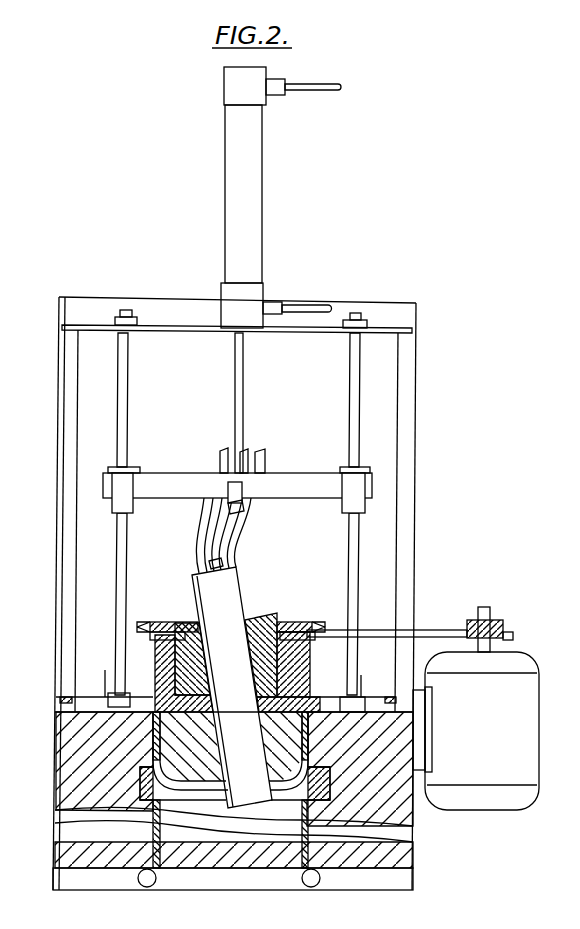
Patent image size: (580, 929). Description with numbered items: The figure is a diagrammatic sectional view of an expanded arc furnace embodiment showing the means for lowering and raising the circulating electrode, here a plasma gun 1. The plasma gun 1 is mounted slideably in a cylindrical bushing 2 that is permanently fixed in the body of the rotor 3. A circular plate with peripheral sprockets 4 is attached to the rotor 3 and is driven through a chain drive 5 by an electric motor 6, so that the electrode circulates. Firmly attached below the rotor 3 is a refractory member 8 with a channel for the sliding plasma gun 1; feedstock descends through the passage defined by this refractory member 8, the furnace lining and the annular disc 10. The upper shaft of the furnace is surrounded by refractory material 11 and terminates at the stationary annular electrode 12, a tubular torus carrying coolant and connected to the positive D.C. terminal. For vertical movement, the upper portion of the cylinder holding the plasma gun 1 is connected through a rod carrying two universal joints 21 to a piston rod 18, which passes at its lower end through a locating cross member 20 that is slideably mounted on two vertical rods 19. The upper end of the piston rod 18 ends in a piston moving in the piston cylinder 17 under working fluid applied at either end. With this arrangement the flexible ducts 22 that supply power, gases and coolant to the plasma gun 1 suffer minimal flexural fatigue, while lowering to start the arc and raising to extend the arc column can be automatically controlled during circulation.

The circulating electrode 1 is at (205, 593).
The cylindrical bushing 2 is at (165, 636).
The rotor 3 is at (183, 680).
The circular plate with peripheral sprockets 4 is at (305, 630).
The chain drive 5 is at (425, 633).
The electric motor 6 is at (503, 700).
The refractory member 8 is at (192, 745).
The annular disc 10 is at (310, 787).
The refractory material 11 is at (382, 852).
The stationary annular electrode 12 is at (311, 891).
The piston cylinder 17 is at (245, 192).
The piston rod 18 is at (243, 378).
The vertical rods 19 is at (113, 418).
The locating cross member 20 is at (285, 488).
The universal joints 21 is at (236, 500).
The flexible ducts 22 is at (246, 451).